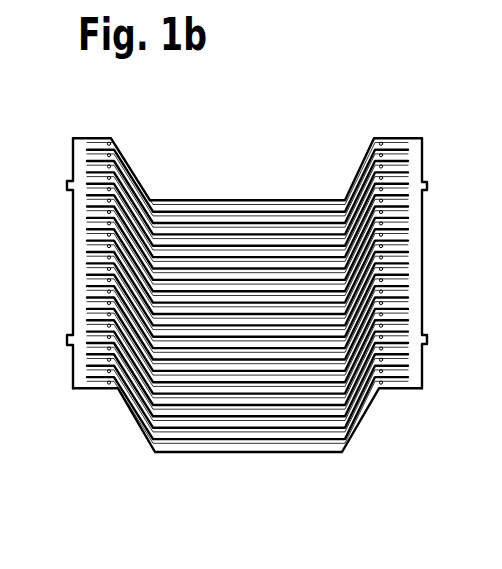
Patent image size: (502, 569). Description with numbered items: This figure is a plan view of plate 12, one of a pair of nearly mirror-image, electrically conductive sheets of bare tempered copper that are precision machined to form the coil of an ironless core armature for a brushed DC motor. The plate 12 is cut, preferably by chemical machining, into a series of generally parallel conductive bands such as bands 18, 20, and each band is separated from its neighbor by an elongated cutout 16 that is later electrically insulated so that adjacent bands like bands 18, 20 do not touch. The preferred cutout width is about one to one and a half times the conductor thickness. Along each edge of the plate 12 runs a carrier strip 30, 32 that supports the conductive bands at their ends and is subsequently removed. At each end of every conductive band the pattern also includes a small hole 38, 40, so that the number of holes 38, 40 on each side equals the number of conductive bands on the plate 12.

The plate 12 is at (217, 274).
The cutout 16 is at (103, 379).
The conductive band 18 is at (227, 449).
The conductive band 20 is at (292, 438).
The carrier strip 30 is at (78, 372).
The carrier strip 32 is at (418, 377).
The hole 38 is at (372, 142).
The hole 40 is at (108, 143).